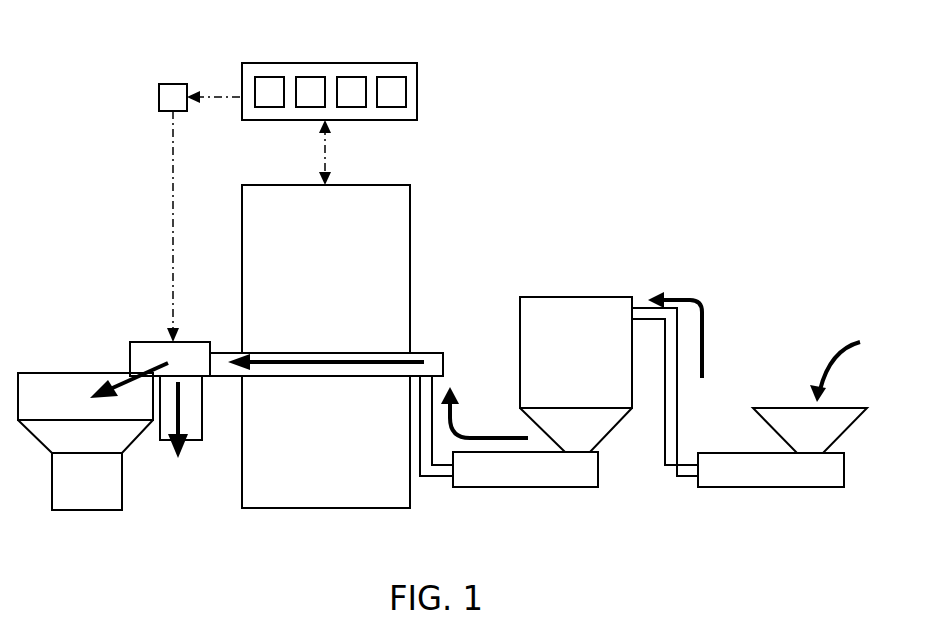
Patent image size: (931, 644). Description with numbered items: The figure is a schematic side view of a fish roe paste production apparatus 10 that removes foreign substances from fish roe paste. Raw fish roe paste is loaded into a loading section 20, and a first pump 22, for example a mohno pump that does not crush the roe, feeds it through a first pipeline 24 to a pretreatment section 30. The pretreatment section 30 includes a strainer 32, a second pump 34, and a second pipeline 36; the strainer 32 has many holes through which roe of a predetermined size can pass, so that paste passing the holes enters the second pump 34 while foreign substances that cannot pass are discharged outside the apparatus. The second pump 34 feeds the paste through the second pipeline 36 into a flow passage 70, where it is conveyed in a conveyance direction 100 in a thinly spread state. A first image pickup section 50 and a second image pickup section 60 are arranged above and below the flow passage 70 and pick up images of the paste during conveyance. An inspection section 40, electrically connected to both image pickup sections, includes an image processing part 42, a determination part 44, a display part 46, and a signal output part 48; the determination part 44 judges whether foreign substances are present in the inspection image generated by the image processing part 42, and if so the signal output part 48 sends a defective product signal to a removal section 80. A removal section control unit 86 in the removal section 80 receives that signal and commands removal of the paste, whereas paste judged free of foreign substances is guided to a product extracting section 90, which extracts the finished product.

The fish roe paste production apparatus 10 is at (152, 204).
The loading section 20 is at (778, 385).
The first pump 22 is at (747, 487).
The first pipeline 24 is at (677, 400).
The pretreatment section 30 is at (586, 328).
The strainer 32 is at (597, 297).
The second pump 34 is at (525, 488).
The second pipeline 36 is at (428, 468).
The inspection section 40 is at (417, 63).
The image processing part 42 is at (268, 77).
The determination part 44 is at (311, 77).
The display part 46 is at (352, 77).
The signal output part 48 is at (392, 77).
The first image pickup section 50 is at (338, 282).
The second image pickup section 60 is at (338, 452).
The flow passage 70 is at (420, 353).
The removal section 80 is at (146, 318).
The removal section control unit 86 is at (172, 84).
The product extracting section 90 is at (67, 350).
The conveyance direction 100 is at (357, 360).